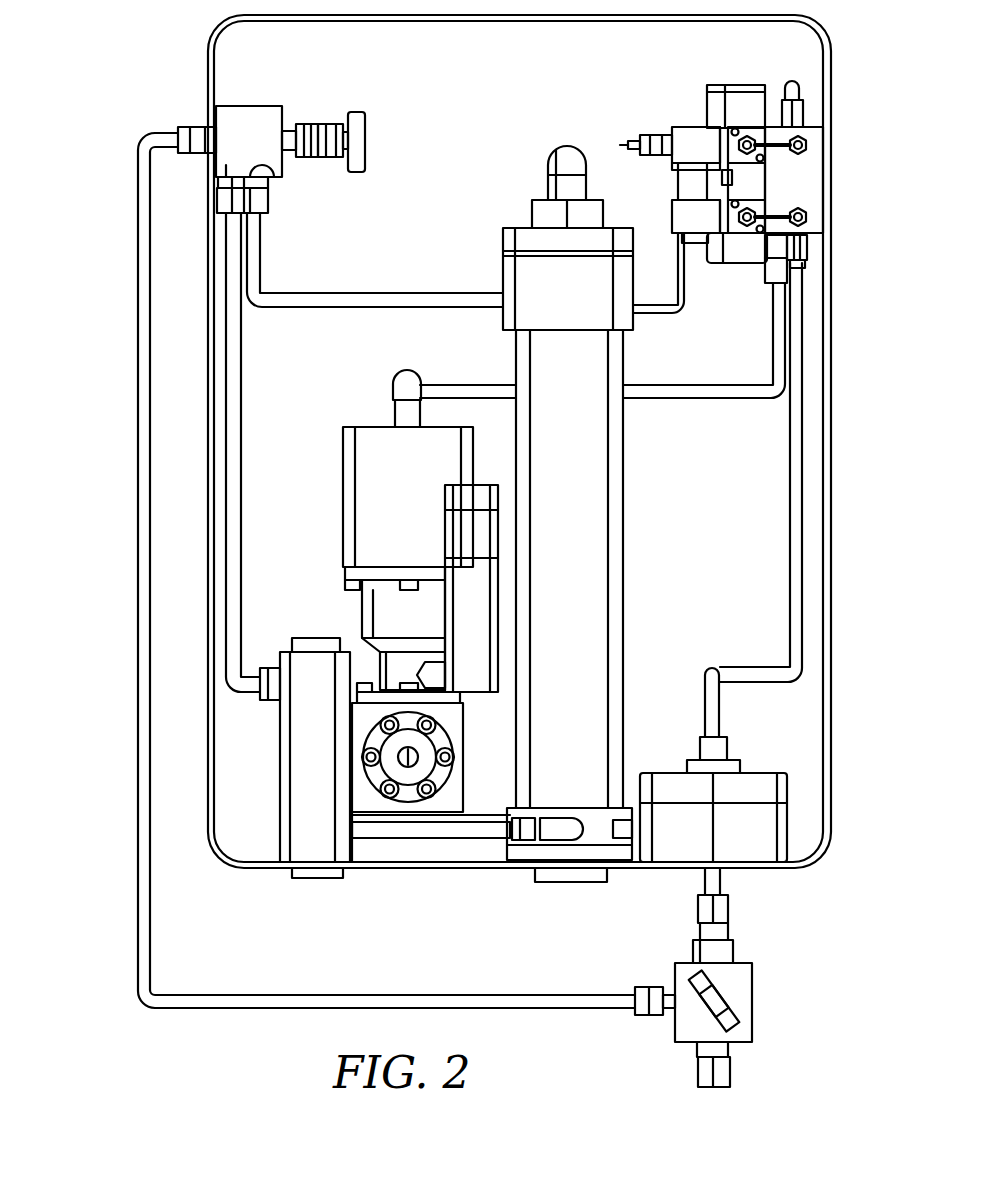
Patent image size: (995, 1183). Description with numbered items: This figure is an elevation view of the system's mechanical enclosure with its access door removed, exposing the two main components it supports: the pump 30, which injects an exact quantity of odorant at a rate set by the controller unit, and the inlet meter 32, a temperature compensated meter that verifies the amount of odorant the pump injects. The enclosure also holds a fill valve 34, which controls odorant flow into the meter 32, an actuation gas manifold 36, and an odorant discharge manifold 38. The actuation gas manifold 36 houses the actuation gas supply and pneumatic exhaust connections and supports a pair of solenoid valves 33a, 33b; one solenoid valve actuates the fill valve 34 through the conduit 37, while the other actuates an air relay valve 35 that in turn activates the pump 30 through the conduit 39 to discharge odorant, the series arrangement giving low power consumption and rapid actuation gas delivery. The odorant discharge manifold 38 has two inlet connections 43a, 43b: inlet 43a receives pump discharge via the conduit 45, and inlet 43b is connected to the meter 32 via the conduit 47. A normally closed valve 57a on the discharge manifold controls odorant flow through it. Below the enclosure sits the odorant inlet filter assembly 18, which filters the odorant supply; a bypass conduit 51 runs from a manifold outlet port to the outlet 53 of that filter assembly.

The odorant inlet filter assembly 18 is at (752, 1002).
The pump 30 is at (314, 588).
The inlet meter 32 is at (650, 568).
The solenoid valve 33a is at (733, 286).
The solenoid valve 33b is at (688, 114).
The fill valve 34 is at (766, 772).
The air relay valve 35 is at (744, 114).
The actuation gas manifold 36 is at (808, 197).
The conduit 37 is at (790, 503).
The odorant discharge manifold 38 is at (256, 100).
The conduit 39 is at (700, 399).
The inlet connection 43a is at (232, 176).
The inlet connection 43b is at (274, 178).
The conduit 45 is at (243, 450).
The conduit 47 is at (385, 292).
The bypass conduit 51 is at (137, 572).
The outlet 53 is at (650, 1030).
The valve 57a is at (324, 116).